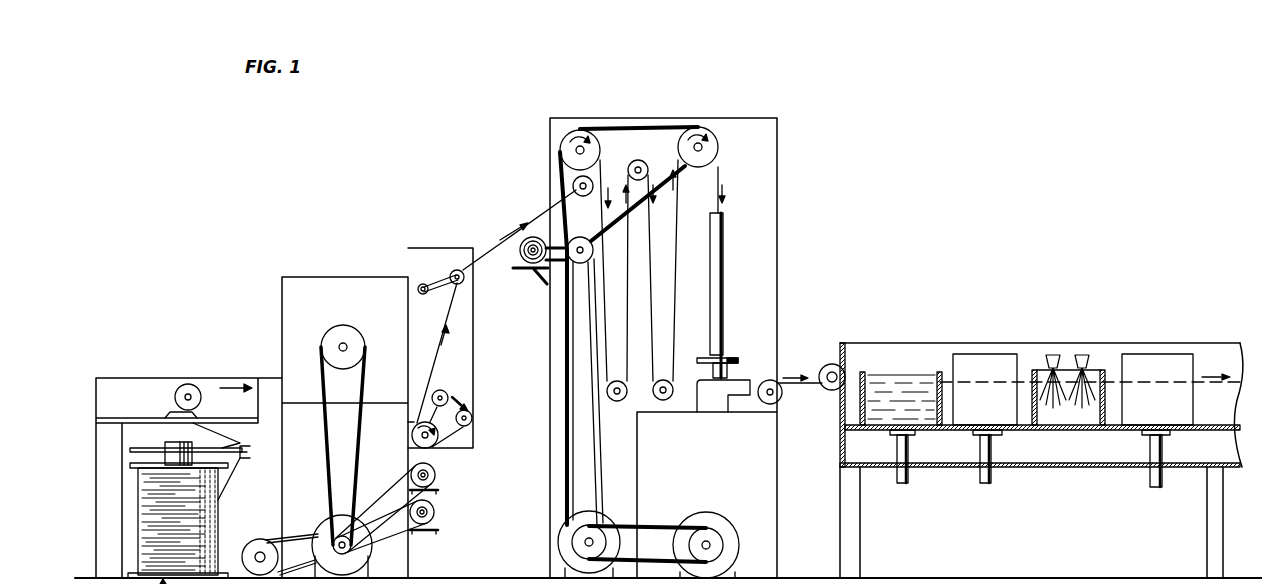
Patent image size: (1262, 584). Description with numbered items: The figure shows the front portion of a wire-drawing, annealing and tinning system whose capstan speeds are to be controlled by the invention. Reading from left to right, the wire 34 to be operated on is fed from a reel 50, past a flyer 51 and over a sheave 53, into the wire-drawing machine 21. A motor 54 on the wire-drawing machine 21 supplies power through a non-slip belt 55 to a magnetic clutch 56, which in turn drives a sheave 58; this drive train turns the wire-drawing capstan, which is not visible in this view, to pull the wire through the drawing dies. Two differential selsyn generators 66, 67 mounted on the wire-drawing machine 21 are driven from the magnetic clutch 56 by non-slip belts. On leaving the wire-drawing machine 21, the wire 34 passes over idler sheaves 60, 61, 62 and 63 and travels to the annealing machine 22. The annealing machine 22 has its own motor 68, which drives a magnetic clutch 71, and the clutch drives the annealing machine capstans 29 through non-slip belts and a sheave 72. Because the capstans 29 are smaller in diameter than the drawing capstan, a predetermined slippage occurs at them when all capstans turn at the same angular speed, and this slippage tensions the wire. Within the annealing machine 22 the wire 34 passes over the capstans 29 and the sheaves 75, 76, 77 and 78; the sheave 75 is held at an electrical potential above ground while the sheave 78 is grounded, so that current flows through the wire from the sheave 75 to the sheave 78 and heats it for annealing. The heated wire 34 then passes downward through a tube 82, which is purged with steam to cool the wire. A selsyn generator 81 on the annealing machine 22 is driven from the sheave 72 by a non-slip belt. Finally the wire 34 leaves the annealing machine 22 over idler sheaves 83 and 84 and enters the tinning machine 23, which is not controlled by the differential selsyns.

The wire-drawing machine 21 is at (335, 276).
The annealing machine 22 is at (779, 182).
The tinning machine 23 is at (958, 340).
The annealing machine capstans 29 is at (583, 130).
The wire 34 is at (265, 378).
The reel 50 is at (148, 465).
The flyer 51 is at (240, 443).
The sheave 53 is at (190, 384).
The motor 54 is at (245, 553).
The non-slip belt 55 is at (287, 541).
The magnetic clutch 56 is at (324, 528).
The sheave 58 is at (343, 325).
The idler sheave 60 is at (413, 437).
The idler sheave 61 is at (448, 391).
The idler sheave 62 is at (472, 418).
The idler sheave 63 is at (458, 270).
The differential selsyn generator 66 is at (436, 477).
The differential selsyn generator 67 is at (435, 514).
The motor 68 is at (713, 514).
The magnetic clutch 71 is at (558, 545).
The sheave 72 is at (568, 268).
The sheave 75 is at (573, 186).
The sheave 76 is at (622, 402).
The sheave 77 is at (636, 160).
The sheave 78 is at (668, 401).
The selsyn generator 81 is at (518, 257).
The tube 82 is at (717, 258).
The idler sheave 83 is at (770, 380).
The idler sheave 84 is at (832, 364).